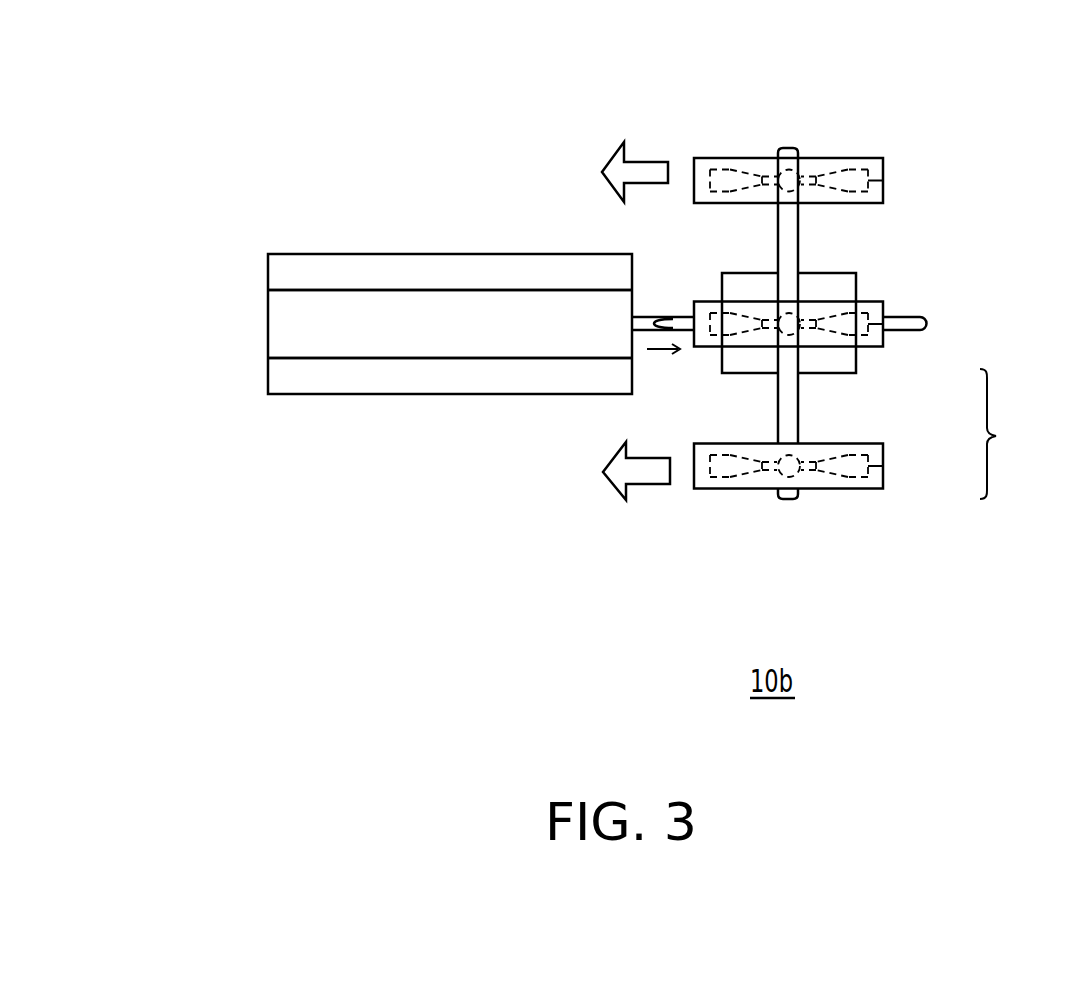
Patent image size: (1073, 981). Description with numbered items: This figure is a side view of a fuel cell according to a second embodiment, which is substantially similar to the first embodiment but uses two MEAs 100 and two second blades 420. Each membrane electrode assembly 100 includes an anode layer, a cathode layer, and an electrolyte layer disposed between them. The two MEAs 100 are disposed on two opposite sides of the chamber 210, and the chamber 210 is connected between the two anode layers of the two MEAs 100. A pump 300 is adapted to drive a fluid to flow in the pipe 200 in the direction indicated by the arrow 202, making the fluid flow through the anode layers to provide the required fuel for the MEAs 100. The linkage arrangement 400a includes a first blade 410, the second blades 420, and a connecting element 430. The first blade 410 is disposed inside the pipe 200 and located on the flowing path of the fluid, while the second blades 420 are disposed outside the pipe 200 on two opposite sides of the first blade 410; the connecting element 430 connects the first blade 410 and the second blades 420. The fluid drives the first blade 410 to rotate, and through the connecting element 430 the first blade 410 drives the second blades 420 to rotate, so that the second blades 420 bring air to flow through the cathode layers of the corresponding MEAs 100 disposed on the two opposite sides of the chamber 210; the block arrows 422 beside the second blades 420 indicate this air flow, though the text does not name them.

The membrane electrode assembly 100 is at (453, 266).
The chamber 210 is at (285, 327).
The pipe 200 is at (657, 322).
The arrow 202 is at (659, 356).
The pump 300 is at (838, 288).
The first blade 410 is at (867, 325).
The second blade 420 is at (887, 178).
The roller movement arrow 422 is at (648, 158).
The connecting element 430 is at (788, 403).
The linkage arrangement 400a is at (1017, 434).